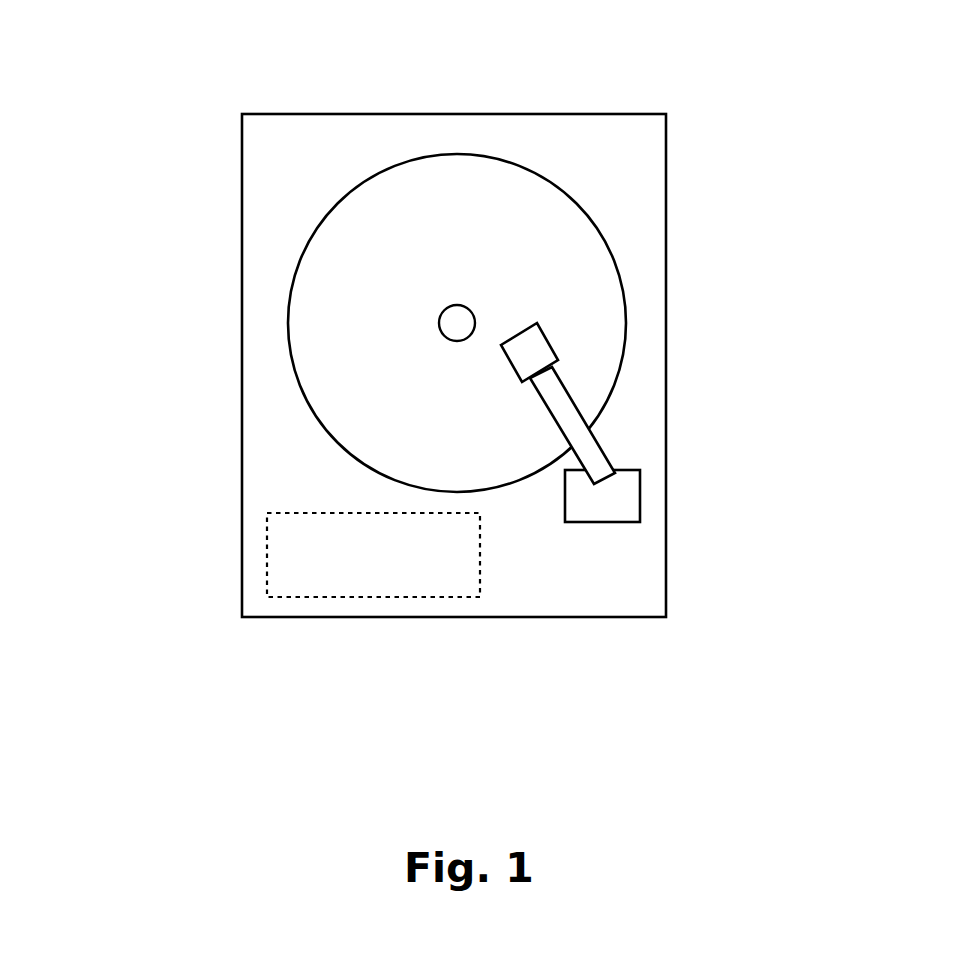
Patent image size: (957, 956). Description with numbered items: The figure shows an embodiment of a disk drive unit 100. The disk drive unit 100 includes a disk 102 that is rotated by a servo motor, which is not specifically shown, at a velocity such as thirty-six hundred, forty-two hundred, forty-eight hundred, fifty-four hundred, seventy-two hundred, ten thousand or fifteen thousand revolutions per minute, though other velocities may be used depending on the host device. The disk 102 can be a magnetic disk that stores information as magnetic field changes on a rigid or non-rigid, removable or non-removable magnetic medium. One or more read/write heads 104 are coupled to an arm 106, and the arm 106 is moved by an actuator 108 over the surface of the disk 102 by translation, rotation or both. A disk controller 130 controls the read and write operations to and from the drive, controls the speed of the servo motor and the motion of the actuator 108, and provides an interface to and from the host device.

The disk drive unit 100 is at (726, 60).
The disk 102 is at (350, 193).
The read/write heads 104 is at (578, 351).
The arm 106 is at (581, 411).
The actuator 108 is at (565, 498).
The disk controller 130 is at (396, 582).